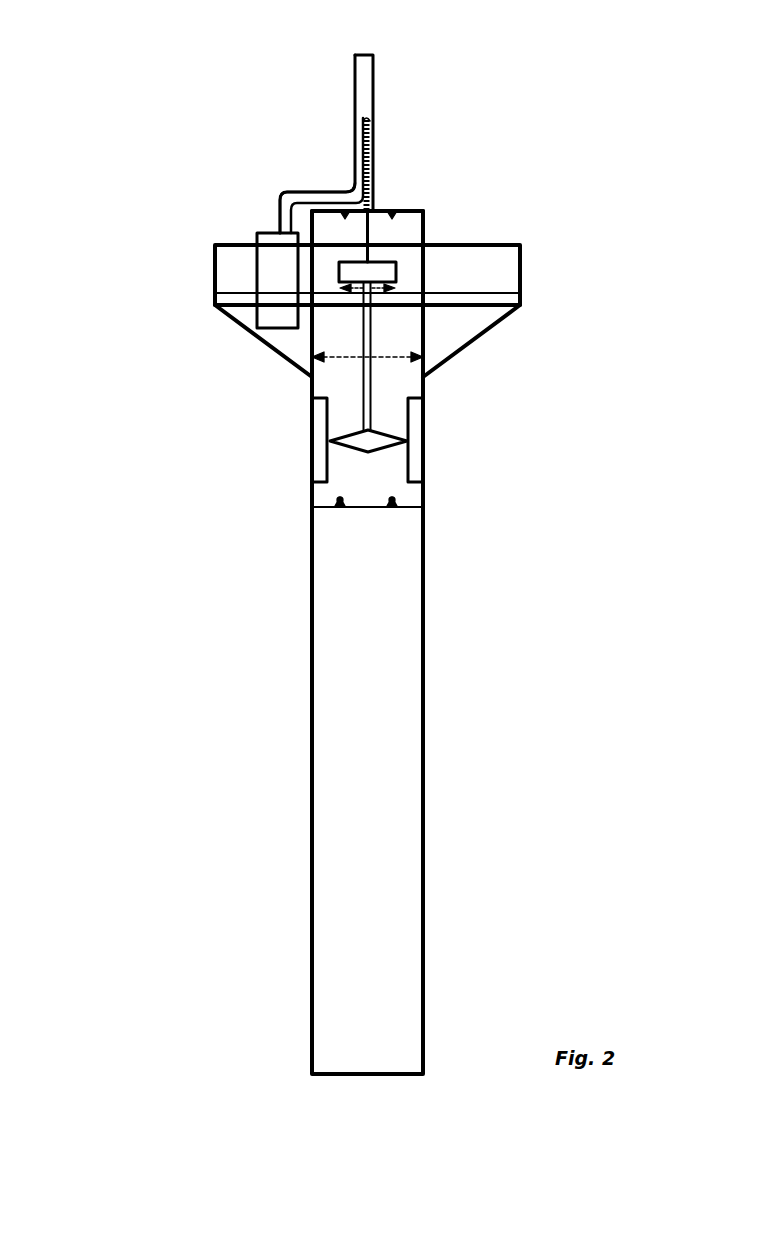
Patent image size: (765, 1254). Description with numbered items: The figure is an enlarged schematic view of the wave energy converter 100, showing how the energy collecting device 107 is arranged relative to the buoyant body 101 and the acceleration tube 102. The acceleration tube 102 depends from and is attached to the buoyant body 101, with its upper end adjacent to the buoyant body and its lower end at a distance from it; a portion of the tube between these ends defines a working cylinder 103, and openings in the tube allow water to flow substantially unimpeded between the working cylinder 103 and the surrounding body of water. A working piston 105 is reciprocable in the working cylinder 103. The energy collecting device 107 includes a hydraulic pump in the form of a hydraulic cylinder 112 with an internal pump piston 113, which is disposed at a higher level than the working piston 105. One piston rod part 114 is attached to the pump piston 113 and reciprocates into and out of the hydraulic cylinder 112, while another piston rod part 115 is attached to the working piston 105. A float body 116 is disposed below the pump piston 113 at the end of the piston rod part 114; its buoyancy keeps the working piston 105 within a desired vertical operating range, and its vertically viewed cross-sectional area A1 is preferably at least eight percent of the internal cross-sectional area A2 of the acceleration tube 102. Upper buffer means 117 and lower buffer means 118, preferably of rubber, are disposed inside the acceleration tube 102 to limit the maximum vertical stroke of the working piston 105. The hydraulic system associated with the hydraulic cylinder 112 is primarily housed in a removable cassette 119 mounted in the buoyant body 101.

The wave energy converter 100 is at (186, 73).
The buoyant body 101 is at (527, 231).
The acceleration tube 102 is at (442, 681).
The working cylinder 103 is at (408, 476).
The working piston 105 is at (367, 453).
The energy collecting device 107 is at (321, 152).
The hydraulic cylinder 112 is at (394, 77).
The pump piston 113 is at (366, 122).
The piston rod part 114 is at (370, 248).
The piston rod part 115 is at (370, 327).
The float body 116 is at (396, 272).
The upper buffer means 117 is at (346, 232).
The lower buffer means 118 is at (383, 503).
The removable cassette 119 is at (255, 267).
The cross-sectional area of the float body A1 is at (358, 292).
The internal cross-sectional area of the acceleration tube A2 is at (350, 359).